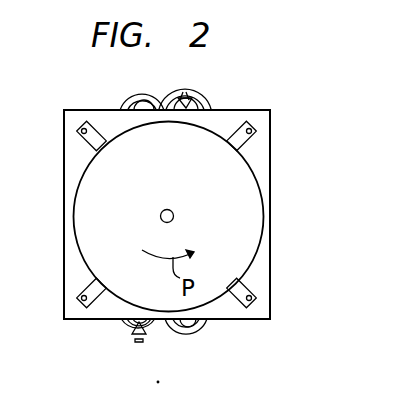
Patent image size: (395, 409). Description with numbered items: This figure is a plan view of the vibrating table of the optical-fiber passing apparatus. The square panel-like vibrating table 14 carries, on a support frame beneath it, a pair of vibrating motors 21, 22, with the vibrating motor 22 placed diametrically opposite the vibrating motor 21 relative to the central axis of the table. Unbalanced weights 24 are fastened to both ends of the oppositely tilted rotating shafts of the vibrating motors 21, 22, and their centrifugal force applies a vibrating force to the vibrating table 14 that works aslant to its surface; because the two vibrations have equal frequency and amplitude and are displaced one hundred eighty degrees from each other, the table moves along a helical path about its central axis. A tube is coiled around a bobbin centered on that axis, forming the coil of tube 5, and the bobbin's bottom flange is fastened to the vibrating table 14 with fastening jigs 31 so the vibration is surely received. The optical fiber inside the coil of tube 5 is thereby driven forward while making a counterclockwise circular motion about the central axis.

The coil of tube 5 is at (262, 182).
The vibrating table 14 is at (262, 282).
The vibrating motor 21 is at (182, 330).
The vibrating motor 22 is at (133, 96).
The unbalanced weights 24 is at (199, 97).
The fastening jigs 31 is at (82, 291).